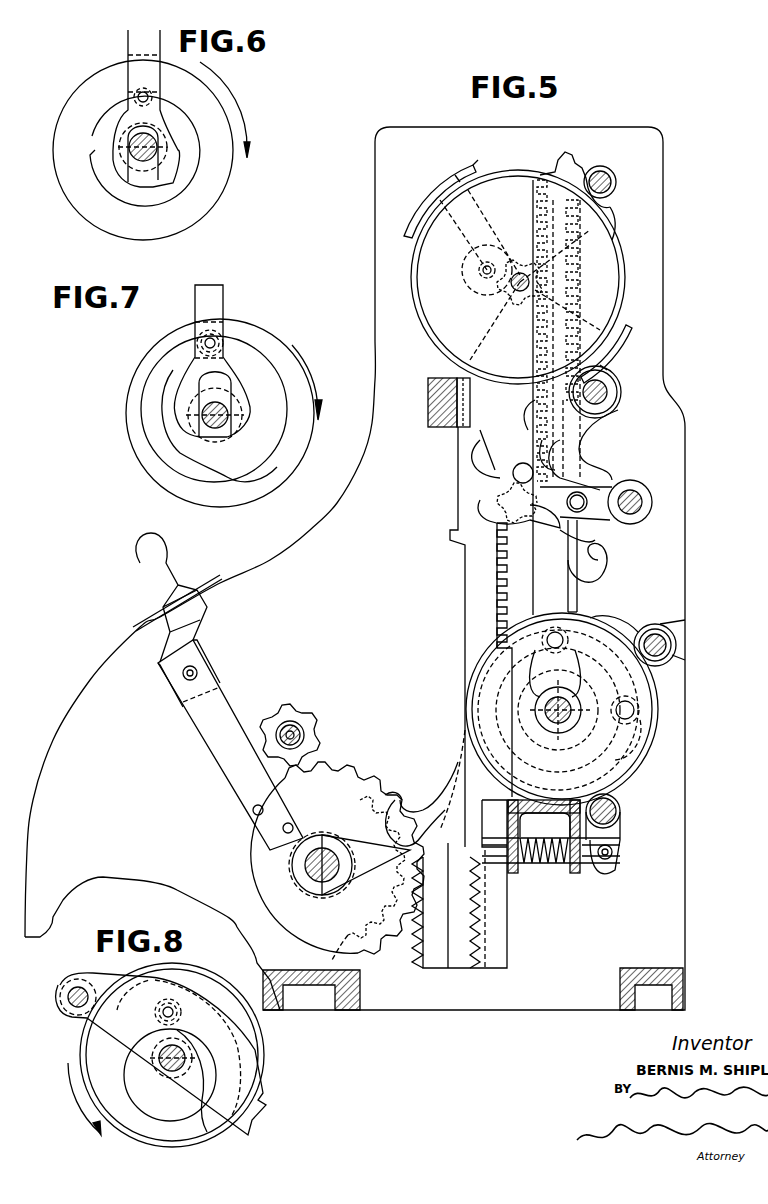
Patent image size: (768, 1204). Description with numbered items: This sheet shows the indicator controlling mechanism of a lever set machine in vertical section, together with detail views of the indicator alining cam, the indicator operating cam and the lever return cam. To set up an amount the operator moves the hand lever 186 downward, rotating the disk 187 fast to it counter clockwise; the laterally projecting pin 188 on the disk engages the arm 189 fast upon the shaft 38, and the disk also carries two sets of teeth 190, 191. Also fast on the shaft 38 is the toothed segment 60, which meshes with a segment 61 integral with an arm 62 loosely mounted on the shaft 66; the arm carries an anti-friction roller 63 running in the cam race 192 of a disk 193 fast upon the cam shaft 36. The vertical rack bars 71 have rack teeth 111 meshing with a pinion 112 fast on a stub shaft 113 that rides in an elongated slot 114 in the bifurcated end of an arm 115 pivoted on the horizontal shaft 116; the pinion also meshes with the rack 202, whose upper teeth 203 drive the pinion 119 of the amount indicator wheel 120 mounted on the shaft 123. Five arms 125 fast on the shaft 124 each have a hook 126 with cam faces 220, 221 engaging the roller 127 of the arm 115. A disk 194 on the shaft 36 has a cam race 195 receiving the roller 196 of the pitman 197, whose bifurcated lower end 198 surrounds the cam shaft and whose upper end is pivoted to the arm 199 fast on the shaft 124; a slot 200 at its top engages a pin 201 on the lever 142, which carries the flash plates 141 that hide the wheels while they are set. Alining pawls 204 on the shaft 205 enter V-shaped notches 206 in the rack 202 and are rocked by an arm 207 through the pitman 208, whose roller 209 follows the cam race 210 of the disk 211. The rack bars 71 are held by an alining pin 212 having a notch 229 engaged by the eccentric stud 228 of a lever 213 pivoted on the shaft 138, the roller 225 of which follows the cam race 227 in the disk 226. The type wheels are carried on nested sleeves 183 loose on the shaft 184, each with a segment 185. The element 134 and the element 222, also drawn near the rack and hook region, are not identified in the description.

In FIG. 6, the cam shaft 36 is at (152, 162).
In FIG. 7, the cam shaft 36 is at (222, 428).
In FIG. 8, the cam shaft 36 is at (185, 1070).
In FIG. 5, the cam shaft 36 is at (568, 715).
In FIG. 5, the shaft 38 is at (305, 868).
In FIG. 5, the toothed segment 60 is at (400, 803).
In FIG. 5, the toothed segment 61 is at (485, 920).
In FIG. 8, the arm 62 is at (262, 1100).
In FIG. 5, the arm 62 is at (458, 762).
In FIG. 8, the anti-friction roller 63 is at (178, 1008).
In FIG. 8, the shaft 66 is at (76, 990).
In FIG. 5, the shaft 66 is at (660, 640).
In FIG. 5, the vertical rack bar 71 is at (437, 960).
In FIG. 5, the rack teeth 111 is at (497, 578).
In FIG. 5, the pinion 112 is at (512, 474).
In FIG. 5, the stub shaft 113 is at (514, 522).
In FIG. 5, the elongated slot 114 is at (492, 505).
In FIG. 5, the arm 115 is at (648, 498).
In FIG. 5, the horizontal shaft 116 is at (640, 502).
In FIG. 5, the pinion 119 is at (540, 305).
In FIG. 5, the amount indicator wheel 120 is at (628, 248).
In FIG. 5, the shaft 123 is at (505, 298).
In FIG. 5, the shaft 124 is at (620, 392).
In FIG. 5, the arm 125 is at (645, 410).
In FIG. 5, the hook 126 is at (505, 462).
In FIG. 5, the anti-friction roller 127 is at (585, 497).
In FIG. 5, the guide 134 is at (480, 945).
In FIG. 5, the shaft 138 is at (620, 812).
In FIG. 5, the flash plate 141 is at (408, 228).
In FIG. 5, the lever 142 is at (470, 165).
In FIG. 5, the nest of sleeves 183 is at (306, 735).
In FIG. 5, the shaft 184 is at (290, 725).
In FIG. 5, the segment 185 is at (306, 716).
In FIG. 5, the hand lever 186 is at (140, 562).
In FIG. 5, the disk 187 is at (240, 835).
In FIG. 5, the laterally projecting pin 188 is at (362, 870).
In FIG. 5, the arm 189 is at (378, 792).
In FIG. 5, the set of teeth 190 is at (382, 948).
In FIG. 5, the set of teeth 191 is at (340, 778).
In FIG. 8, the cam race 192 is at (100, 1040).
In FIG. 8, the disk 193 is at (262, 1045).
In FIG. 7, the disk 194 is at (265, 345).
In FIG. 7, the cam race 195 is at (145, 405).
In FIG. 7, the anti-friction roller 196 is at (202, 345).
In FIG. 7, the pitman 197 is at (200, 300).
In FIG. 5, the pitman 197 is at (580, 590).
In FIG. 7, the bifurcated end 198 is at (185, 375).
In FIG. 5, the arm 199 is at (598, 325).
In FIG. 5, the slot 200 is at (478, 270).
In FIG. 5, the pin 201 is at (508, 282).
In FIG. 5, the rack 202 is at (540, 404).
In FIG. 5, the rack teeth 203 is at (524, 185).
In FIG. 5, the alining pawl 204 is at (614, 208).
In FIG. 5, the horizontal shaft 205 is at (612, 178).
In FIG. 5, the notch 206 is at (560, 162).
In FIG. 5, the arm 207 is at (582, 165).
In FIG. 6, the pitman 208 is at (134, 45).
In FIG. 5, the pitman 208 is at (600, 560).
In FIG. 6, the antifriction roller 209 is at (132, 100).
In FIG. 6, the cam race 210 is at (92, 130).
In FIG. 6, the disk 211 is at (58, 158).
In FIG. 5, the alining pin 212 is at (555, 865).
In FIG. 5, the lever 213 is at (620, 840).
In FIG. 5, the cam face 220 is at (588, 482).
In FIG. 5, the cam face 221 is at (595, 538).
In FIG. 5, the lever arm 222 is at (540, 440).
In FIG. 5, the antifriction roller 225 is at (634, 718).
In FIG. 5, the disk 226 is at (652, 690).
In FIG. 5, the cam race 227 is at (645, 712).
In FIG. 5, the eccentric stud 228 is at (612, 855).
In FIG. 5, the notch 229 is at (612, 858).